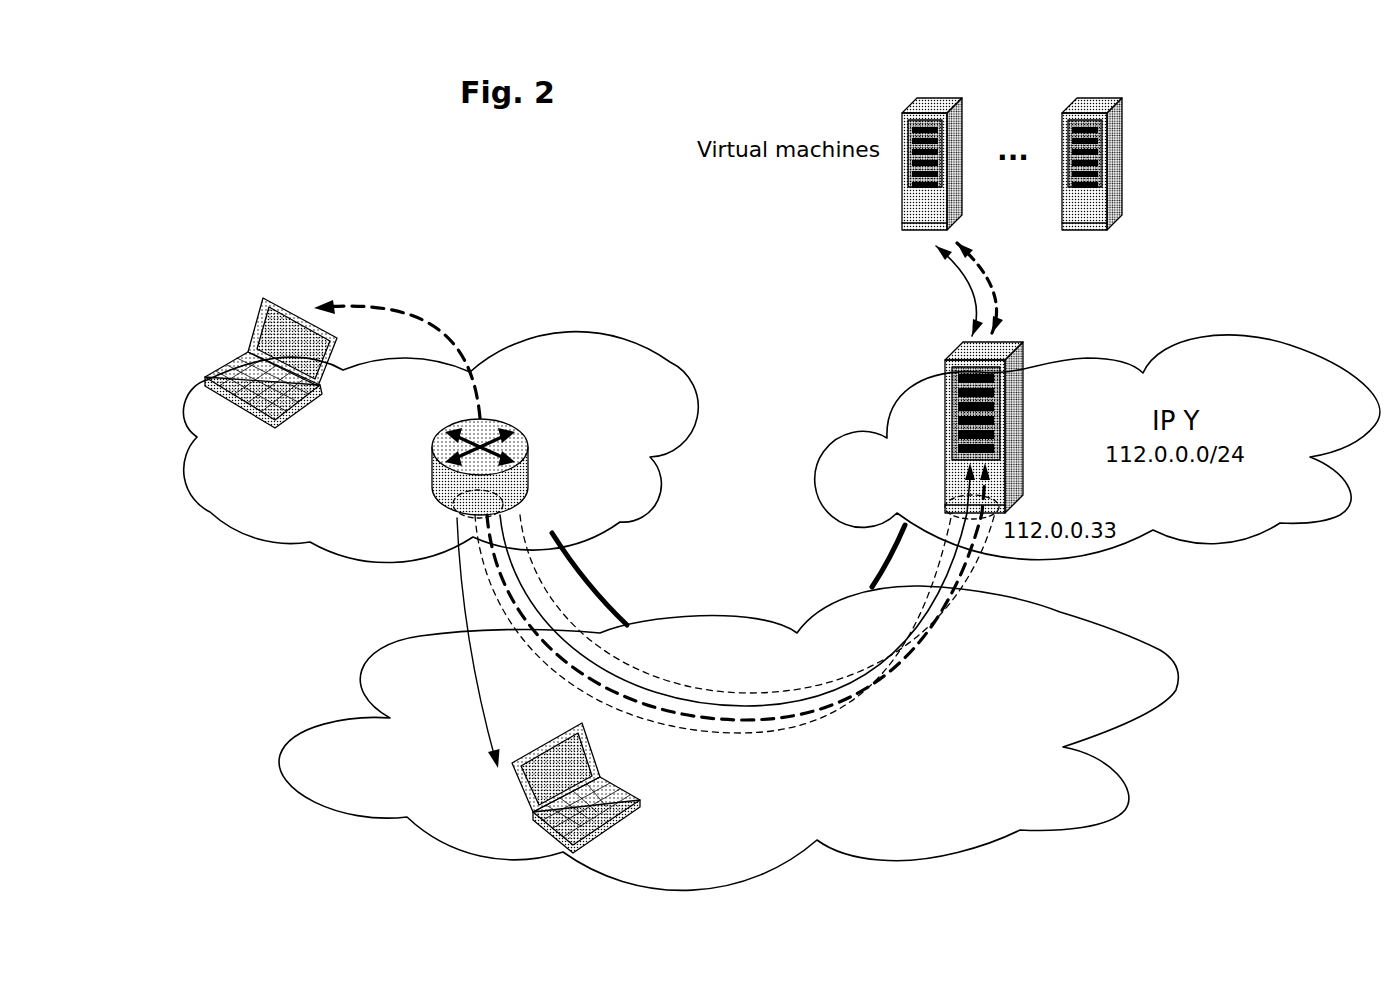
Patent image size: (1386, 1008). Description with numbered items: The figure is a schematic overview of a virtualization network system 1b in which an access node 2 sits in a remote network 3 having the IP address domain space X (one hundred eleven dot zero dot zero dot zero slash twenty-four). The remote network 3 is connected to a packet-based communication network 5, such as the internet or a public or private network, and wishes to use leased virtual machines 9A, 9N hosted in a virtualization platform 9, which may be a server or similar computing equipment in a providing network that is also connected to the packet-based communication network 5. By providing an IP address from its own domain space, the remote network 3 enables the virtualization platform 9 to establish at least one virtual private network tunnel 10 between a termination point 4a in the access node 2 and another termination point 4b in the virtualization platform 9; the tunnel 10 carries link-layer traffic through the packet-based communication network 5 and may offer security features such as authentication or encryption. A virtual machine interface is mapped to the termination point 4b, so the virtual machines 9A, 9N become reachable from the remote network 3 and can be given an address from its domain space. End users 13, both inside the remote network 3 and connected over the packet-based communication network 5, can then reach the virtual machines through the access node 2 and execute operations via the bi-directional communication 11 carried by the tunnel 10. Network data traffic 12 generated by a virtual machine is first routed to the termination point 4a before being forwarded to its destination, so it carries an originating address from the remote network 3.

The virtualization network system 1b is at (372, 210).
The access node 2 is at (512, 422).
The remote network 3 is at (672, 362).
The termination point 4a is at (533, 487).
The another termination point 4b is at (945, 500).
The packet-based communication network 5 is at (1167, 655).
The virtualization platform 9 is at (1020, 341).
The virtual machine 9A is at (923, 98).
The virtual machine 9N is at (1083, 98).
The virtual private network (VPN) tunnel 10 is at (840, 713).
The bi-directional communication 11 is at (433, 322).
The network data traffic 12 is at (457, 590).
The end users 13 is at (247, 324).